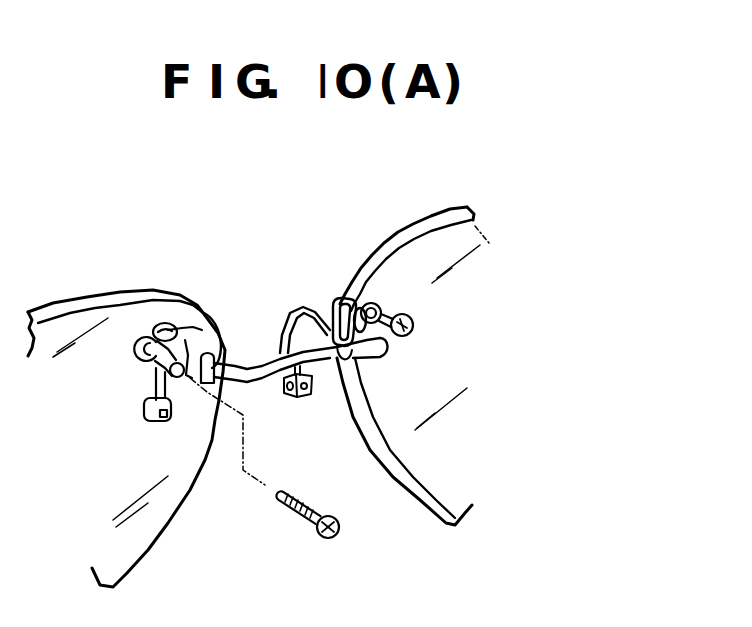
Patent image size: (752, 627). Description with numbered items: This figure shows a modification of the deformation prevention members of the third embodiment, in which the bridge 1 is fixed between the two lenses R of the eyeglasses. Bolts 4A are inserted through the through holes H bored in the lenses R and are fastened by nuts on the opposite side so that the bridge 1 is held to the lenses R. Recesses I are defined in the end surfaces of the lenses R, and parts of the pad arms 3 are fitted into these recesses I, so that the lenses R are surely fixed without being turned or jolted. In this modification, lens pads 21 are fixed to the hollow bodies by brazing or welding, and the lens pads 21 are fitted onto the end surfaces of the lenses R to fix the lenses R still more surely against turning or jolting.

The bridge 1 is at (268, 370).
The pad arm 3 is at (284, 318).
The lens pad 21 is at (329, 300).
The bolt 4A is at (413, 329).
The through hole H is at (174, 397).
The recess I is at (213, 320).
The lens R is at (463, 477).